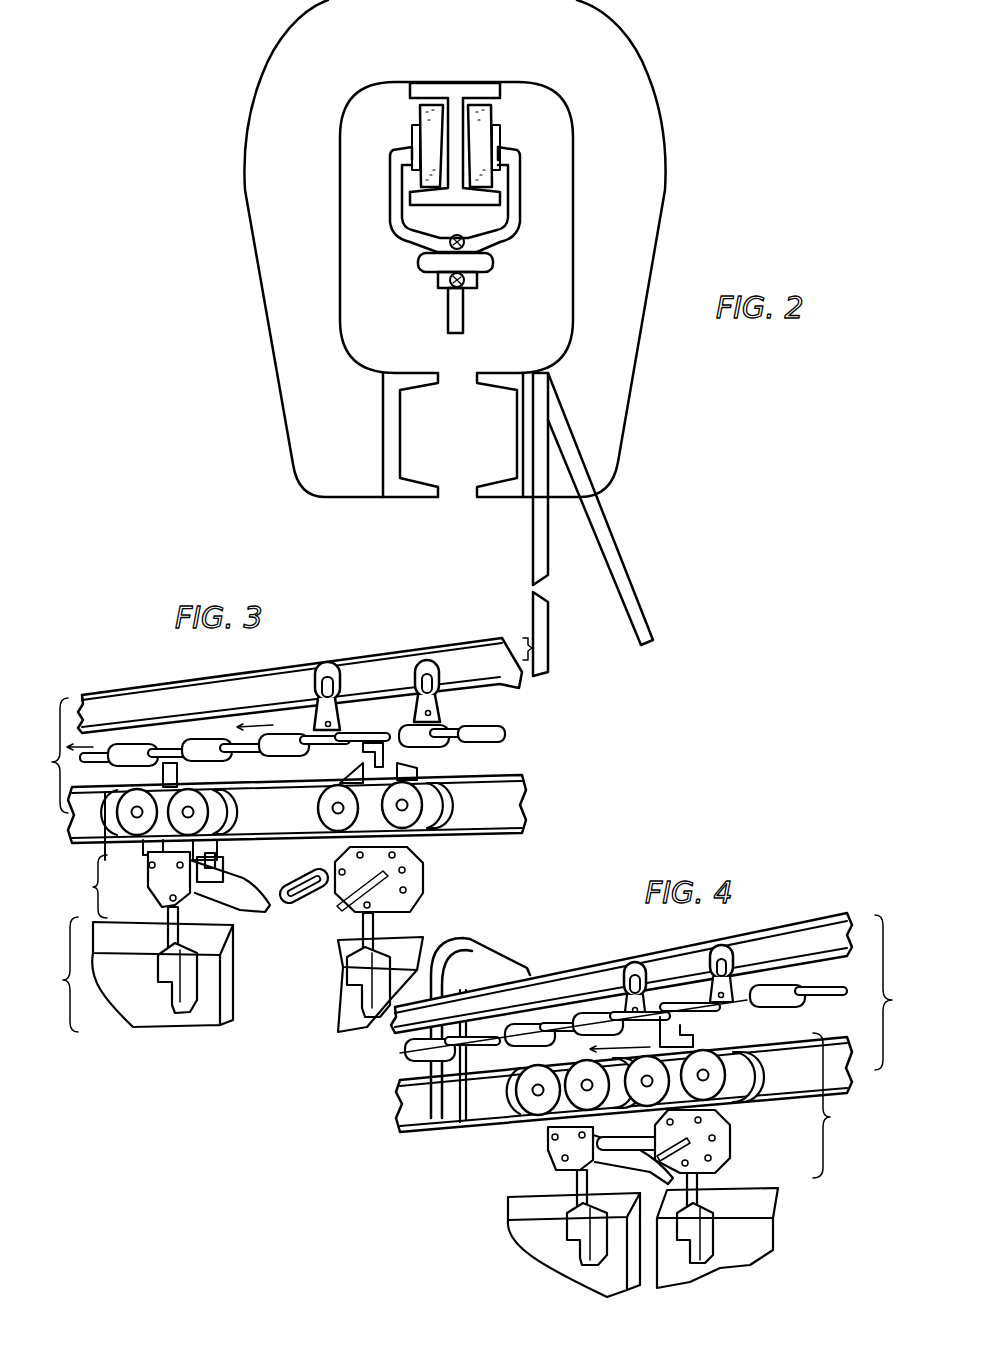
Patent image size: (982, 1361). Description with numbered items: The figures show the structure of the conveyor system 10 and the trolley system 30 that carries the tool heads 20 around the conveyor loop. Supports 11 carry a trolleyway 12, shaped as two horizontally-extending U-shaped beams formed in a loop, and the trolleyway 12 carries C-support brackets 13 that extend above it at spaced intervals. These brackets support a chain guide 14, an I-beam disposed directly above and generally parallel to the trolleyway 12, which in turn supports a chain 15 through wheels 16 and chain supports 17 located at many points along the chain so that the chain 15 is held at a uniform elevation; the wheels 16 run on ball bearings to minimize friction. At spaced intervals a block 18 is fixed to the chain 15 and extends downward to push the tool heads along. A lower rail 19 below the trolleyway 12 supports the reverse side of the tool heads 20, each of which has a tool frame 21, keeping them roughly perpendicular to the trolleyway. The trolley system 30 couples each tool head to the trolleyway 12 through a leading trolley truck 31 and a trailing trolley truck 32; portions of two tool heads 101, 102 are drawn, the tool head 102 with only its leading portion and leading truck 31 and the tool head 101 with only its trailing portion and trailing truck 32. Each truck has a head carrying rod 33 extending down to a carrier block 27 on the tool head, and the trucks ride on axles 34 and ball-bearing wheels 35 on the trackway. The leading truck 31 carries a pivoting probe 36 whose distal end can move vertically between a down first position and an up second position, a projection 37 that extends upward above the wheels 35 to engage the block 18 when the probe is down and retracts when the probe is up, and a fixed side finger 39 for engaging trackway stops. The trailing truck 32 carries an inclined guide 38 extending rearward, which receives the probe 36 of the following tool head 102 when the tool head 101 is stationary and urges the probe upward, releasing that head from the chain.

In FIG. 3, the conveyor system 10 is at (46, 755).
In FIG. 4, the conveyor system 10 is at (898, 992).
In FIG. 2, the supports 11 is at (550, 557).
In FIG. 2, the trolleyway 12 is at (398, 415).
In FIG. 3, the trolleyway 12 is at (510, 810).
In FIG. 4, the trolleyway 12 is at (845, 1012).
In FIG. 2, the C-support bracket 13 is at (613, 397).
In FIG. 4, the C-support bracket 13 is at (468, 940).
In FIG. 2, the chain guide 14 is at (467, 88).
In FIG. 3, the chain guide 14 is at (197, 707).
In FIG. 4, the chain guide 14 is at (813, 915).
In FIG. 2, the chain 15 is at (493, 263).
In FIG. 3, the chain 15 is at (507, 730).
In FIG. 4, the chain 15 is at (543, 998).
In FIG. 2, the wheels 16 is at (418, 118).
In FIG. 3, the wheels 16 is at (333, 658).
In FIG. 2, the chain supports 17 is at (390, 170).
In FIG. 3, the chain supports 17 is at (315, 697).
In FIG. 4, the block 18 is at (660, 976).
In FIG. 2, the lower rail 19 is at (532, 648).
In FIG. 3, the tool heads 20 is at (55, 974).
In FIG. 3, the tool frame 21 is at (347, 1033).
In FIG. 3, the carrier block 27 is at (177, 1003).
In FIG. 4, the carrier block 27 is at (583, 1253).
In FIG. 3, the trolley system 30 is at (141, 855).
In FIG. 4, the trolley system 30 is at (837, 1105).
In FIG. 4, the leading trolley truck 31 is at (693, 1047).
In FIG. 3, the trailing trolley truck 32 is at (150, 863).
In FIG. 4, the trailing trolley truck 32 is at (557, 1143).
In FIG. 3, the head carrying rod 33 is at (168, 912).
In FIG. 4, the head carrying rod 33 is at (577, 1182).
In FIG. 3, the axles 34 is at (193, 793).
In FIG. 4, the axles 34 is at (537, 1090).
In FIG. 3, the wheels 35 is at (323, 815).
In FIG. 4, the wheels 35 is at (713, 1088).
In FIG. 3, the probe 36 is at (290, 907).
In FIG. 4, the probe 36 is at (628, 1130).
In FIG. 3, the projection 37 is at (350, 765).
In FIG. 3, the inclined guide 38 is at (248, 883).
In FIG. 4, the inclined guide 38 is at (633, 1165).
In FIG. 3, the finger 39 is at (413, 877).
In FIG. 4, the finger 39 is at (713, 1138).
In FIG. 3, the tool head 101 is at (148, 947).
In FIG. 4, the tool head 101 is at (555, 1218).
In FIG. 3, the tool head 102 is at (423, 957).
In FIG. 4, the tool head 102 is at (770, 1207).